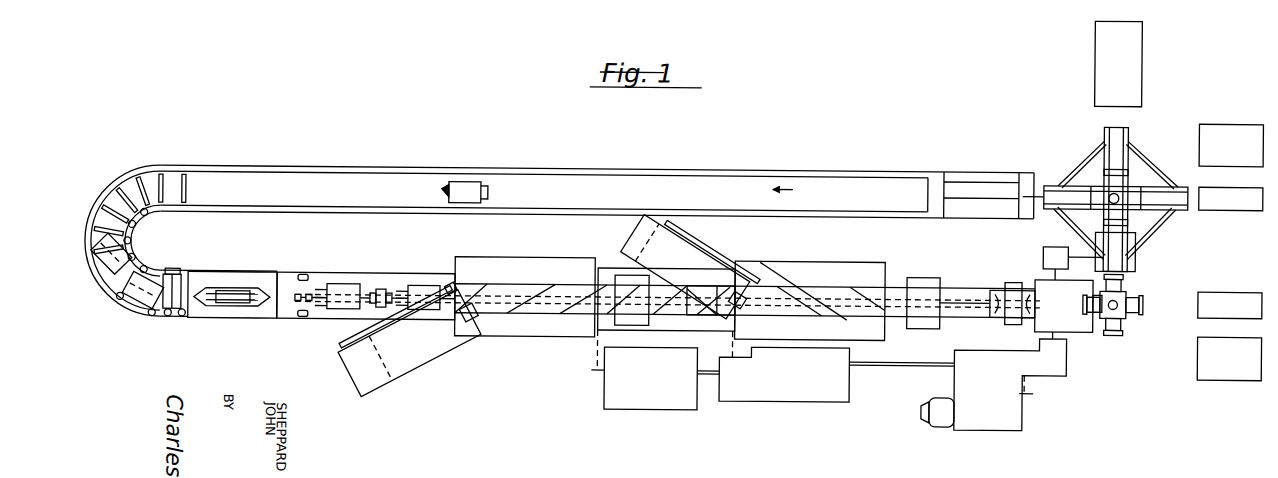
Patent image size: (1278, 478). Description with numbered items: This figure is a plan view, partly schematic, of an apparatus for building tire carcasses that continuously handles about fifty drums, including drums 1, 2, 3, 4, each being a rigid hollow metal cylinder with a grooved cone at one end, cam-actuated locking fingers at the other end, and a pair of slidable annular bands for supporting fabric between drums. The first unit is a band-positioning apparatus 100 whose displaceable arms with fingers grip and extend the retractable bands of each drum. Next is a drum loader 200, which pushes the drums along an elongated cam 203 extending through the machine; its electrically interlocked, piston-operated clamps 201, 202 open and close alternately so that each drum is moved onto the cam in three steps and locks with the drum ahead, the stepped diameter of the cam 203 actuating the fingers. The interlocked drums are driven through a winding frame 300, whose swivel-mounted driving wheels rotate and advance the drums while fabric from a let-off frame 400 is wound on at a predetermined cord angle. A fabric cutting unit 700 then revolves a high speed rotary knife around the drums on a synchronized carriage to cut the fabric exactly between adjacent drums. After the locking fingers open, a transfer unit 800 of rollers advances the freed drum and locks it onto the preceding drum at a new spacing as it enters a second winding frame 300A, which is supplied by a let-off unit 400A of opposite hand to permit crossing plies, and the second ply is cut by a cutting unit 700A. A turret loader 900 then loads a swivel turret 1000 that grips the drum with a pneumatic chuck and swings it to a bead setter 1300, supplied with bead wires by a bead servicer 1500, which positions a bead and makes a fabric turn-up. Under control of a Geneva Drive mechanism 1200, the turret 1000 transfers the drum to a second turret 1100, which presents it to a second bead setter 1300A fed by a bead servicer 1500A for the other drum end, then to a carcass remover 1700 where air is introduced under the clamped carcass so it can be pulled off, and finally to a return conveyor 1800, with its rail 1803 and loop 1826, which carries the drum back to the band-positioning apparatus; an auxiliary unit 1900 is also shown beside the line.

The drum 1 is at (425, 287).
The drum 2 is at (350, 286).
The drum 3 is at (238, 290).
The drum 4 is at (167, 279).
The band-positioning apparatus 100 is at (198, 326).
The drum loader 200 is at (283, 325).
The clamp 201 is at (303, 276).
The clamp 202 is at (383, 291).
The cam 203 is at (314, 296).
The winding frame 300 is at (492, 258).
The second winding frame 300A is at (829, 261).
The let-off frame 400 is at (430, 372).
The let-off unit 400A is at (756, 240).
The fabric cutting unit 700 is at (613, 277).
The cutting unit 700A is at (908, 326).
The transfer unit 800 is at (690, 318).
The turret loader 900 is at (1012, 278).
The swivel turret 1000 is at (1133, 330).
The second turret 1100 is at (1086, 150).
The Geneva Drive mechanism 1200 is at (1148, 256).
The bead setter 1300 is at (1255, 315).
The second bead setter 1300A is at (1255, 207).
The bead servicer 1500 is at (1253, 376).
The bead servicer 1500A is at (1254, 119).
The carcass remover 1700 is at (1093, 78).
The return conveyor 1800 is at (985, 168).
The conveyor rail 1803 is at (870, 169).
The conveyor loop 1826 is at (174, 175).
The pump unit 1900 is at (1030, 416).